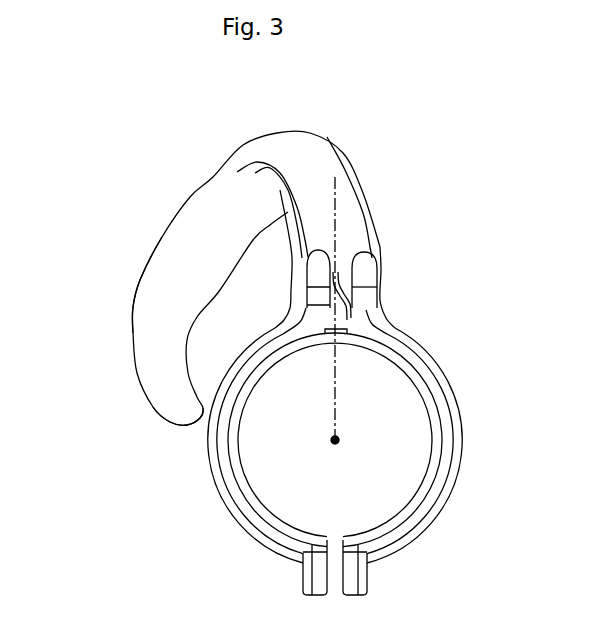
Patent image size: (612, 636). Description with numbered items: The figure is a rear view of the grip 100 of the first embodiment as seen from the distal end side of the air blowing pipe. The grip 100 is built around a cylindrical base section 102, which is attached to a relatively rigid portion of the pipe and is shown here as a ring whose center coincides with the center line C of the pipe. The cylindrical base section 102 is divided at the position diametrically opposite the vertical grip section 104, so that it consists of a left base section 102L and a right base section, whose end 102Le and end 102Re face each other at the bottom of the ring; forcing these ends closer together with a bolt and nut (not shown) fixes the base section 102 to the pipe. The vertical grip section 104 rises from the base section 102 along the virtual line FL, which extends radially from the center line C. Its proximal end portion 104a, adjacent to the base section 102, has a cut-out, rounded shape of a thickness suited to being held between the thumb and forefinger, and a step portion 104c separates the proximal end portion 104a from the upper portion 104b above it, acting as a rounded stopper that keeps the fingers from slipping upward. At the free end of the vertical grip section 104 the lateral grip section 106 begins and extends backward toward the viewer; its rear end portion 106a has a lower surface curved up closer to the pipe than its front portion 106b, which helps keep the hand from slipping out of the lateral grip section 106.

The grip 100 is at (62, 168).
The cylindrical base section 102 is at (210, 463).
The left base section 102L is at (466, 450).
The end of right base section 102Re is at (300, 578).
The end of left base section 102Le is at (372, 577).
The vertical grip section 104 is at (381, 255).
The proximal end portion 104a is at (357, 298).
The upper portion 104b is at (296, 238).
The step portion 104c is at (372, 276).
The lateral grip section 106 is at (190, 198).
The rear end portion 106a is at (175, 405).
The front portion 106b is at (170, 265).
The virtual line FL is at (337, 192).
The center line C is at (335, 440).